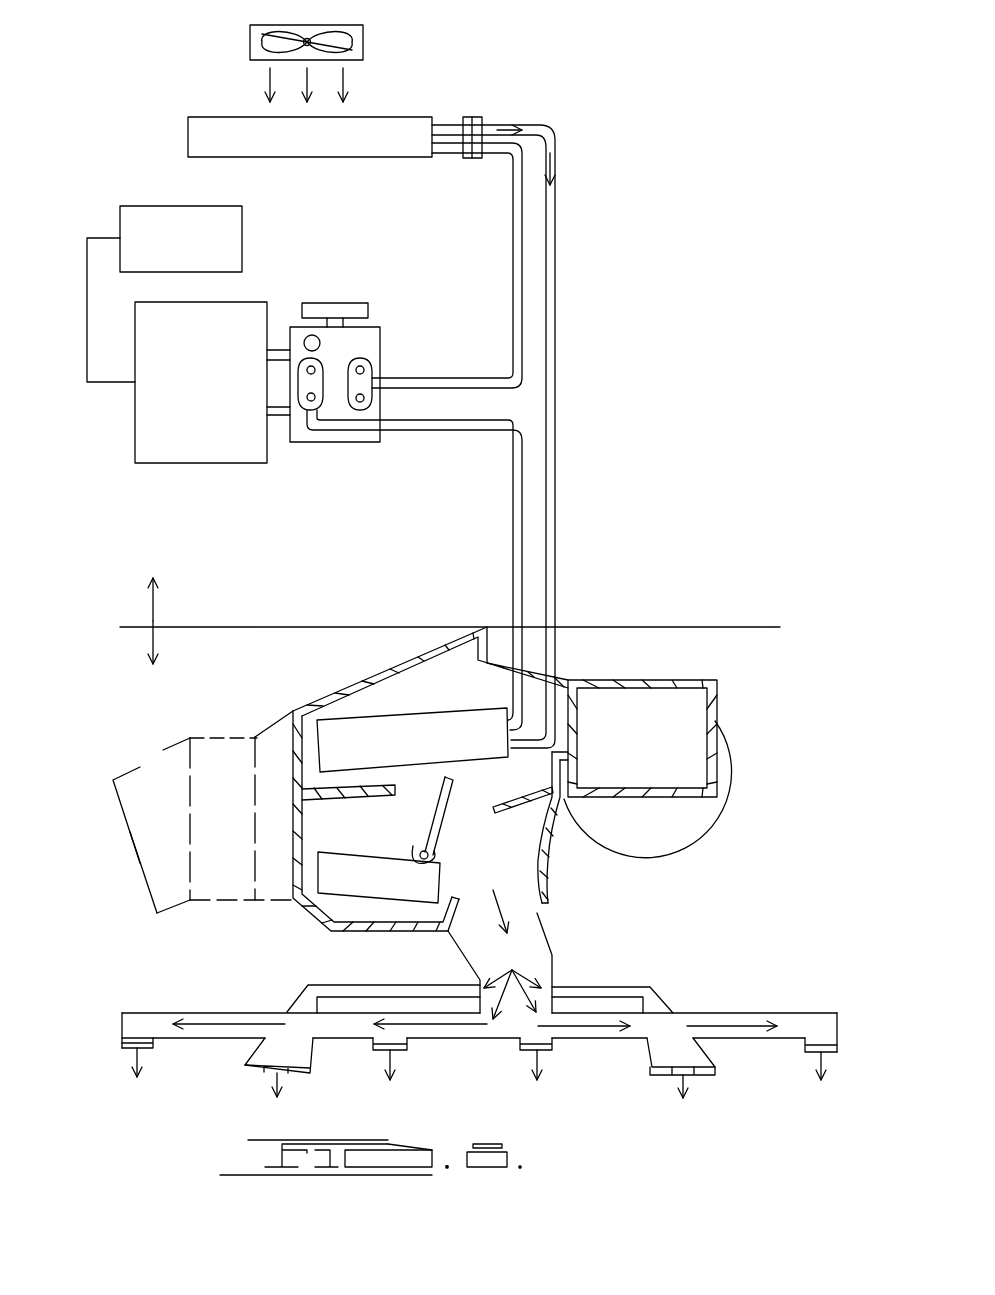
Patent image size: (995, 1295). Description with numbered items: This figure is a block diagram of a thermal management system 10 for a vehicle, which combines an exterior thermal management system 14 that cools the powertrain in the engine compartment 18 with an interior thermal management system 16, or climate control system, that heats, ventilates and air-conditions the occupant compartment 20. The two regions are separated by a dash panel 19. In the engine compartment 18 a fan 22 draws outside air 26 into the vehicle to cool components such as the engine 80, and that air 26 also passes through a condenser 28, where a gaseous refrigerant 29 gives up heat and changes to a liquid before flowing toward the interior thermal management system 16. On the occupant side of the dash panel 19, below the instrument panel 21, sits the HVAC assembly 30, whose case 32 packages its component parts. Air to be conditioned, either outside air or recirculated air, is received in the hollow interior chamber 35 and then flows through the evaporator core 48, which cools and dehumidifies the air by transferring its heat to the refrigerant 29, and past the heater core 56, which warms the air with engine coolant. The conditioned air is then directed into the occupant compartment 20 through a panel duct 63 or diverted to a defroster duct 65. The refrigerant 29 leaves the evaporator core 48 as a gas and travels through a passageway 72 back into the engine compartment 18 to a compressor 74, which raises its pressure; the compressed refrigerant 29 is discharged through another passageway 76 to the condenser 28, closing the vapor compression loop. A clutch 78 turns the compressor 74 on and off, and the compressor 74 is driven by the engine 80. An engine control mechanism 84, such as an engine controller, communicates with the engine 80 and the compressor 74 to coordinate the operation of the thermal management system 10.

The thermal management system 10 is at (679, 98).
The exterior thermal management system 14 is at (412, 46).
The interior thermal management system 16 is at (747, 721).
The engine compartment 18 is at (695, 400).
The dash panel 19 is at (669, 626).
The occupant compartment 20 is at (762, 1150).
The instrument panel 21 is at (731, 1013).
The fan 22 is at (250, 35).
The air 26 is at (265, 74).
The condenser 28 is at (188, 126).
The refrigerant 29 is at (536, 122).
The HVAC assembly 30 is at (353, 682).
The case 32 is at (548, 855).
The interior chamber 35 is at (628, 752).
The evaporator core 48 is at (402, 713).
The heater core 56 is at (350, 852).
The panel duct 63 is at (710, 1057).
The defroster duct 65 is at (125, 1047).
The passageway 72 is at (513, 518).
The compressor 74 is at (380, 342).
The passageway 76 is at (513, 260).
The clutch 78 is at (318, 300).
The engine 80 is at (217, 463).
The engine control mechanism 84 is at (163, 206).